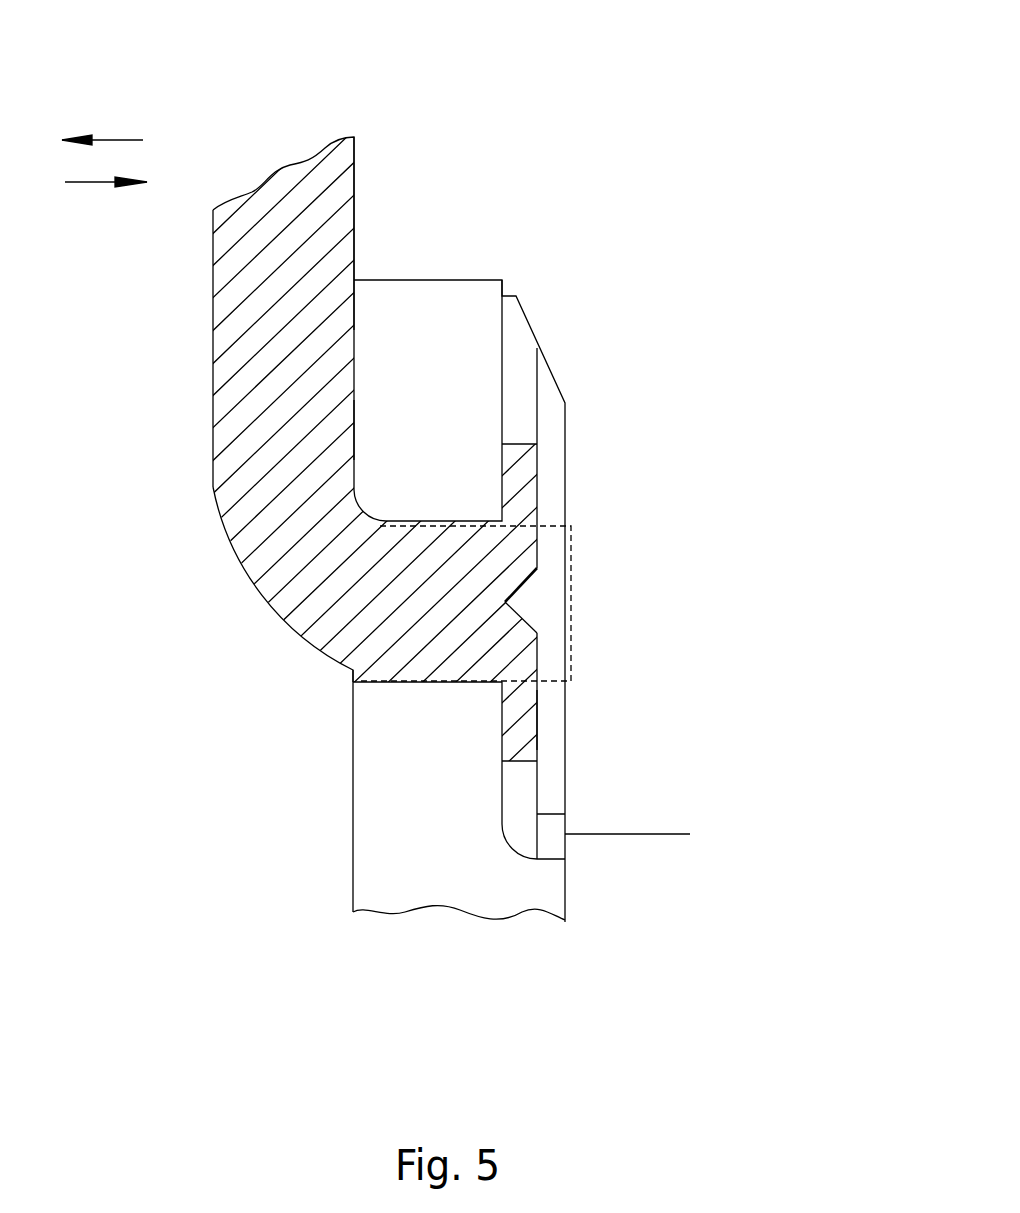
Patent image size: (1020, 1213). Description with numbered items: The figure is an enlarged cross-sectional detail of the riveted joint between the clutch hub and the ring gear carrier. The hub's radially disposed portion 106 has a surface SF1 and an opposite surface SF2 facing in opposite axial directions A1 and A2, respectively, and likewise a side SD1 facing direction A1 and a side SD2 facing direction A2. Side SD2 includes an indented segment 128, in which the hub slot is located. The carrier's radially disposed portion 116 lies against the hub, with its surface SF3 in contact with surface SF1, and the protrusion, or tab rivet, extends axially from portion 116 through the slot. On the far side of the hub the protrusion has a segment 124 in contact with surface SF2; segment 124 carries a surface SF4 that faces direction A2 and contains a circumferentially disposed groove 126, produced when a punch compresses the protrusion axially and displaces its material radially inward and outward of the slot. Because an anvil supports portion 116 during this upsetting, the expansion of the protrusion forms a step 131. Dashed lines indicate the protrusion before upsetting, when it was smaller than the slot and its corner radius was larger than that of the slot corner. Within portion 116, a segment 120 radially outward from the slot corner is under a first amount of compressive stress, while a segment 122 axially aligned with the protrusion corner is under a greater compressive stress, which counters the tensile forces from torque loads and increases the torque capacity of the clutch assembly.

The radially disposed portion 106 is at (443, 83).
The radially disposed portion 116 is at (357, 182).
The segment 120 is at (354, 240).
The segment 122 is at (255, 507).
The segment 124 is at (522, 467).
The circumferentially disposed groove 126 is at (528, 593).
The indented segment 128 is at (502, 745).
The step 131 is at (353, 670).
The surface SF1 is at (353, 431).
The surface SF2 is at (502, 349).
The surface SF3 is at (333, 325).
The surface SF4 is at (537, 713).
The side SD1 is at (353, 843).
The side SD2 is at (565, 895).
The axial direction A1 is at (122, 138).
The axial direction A2 is at (93, 182).